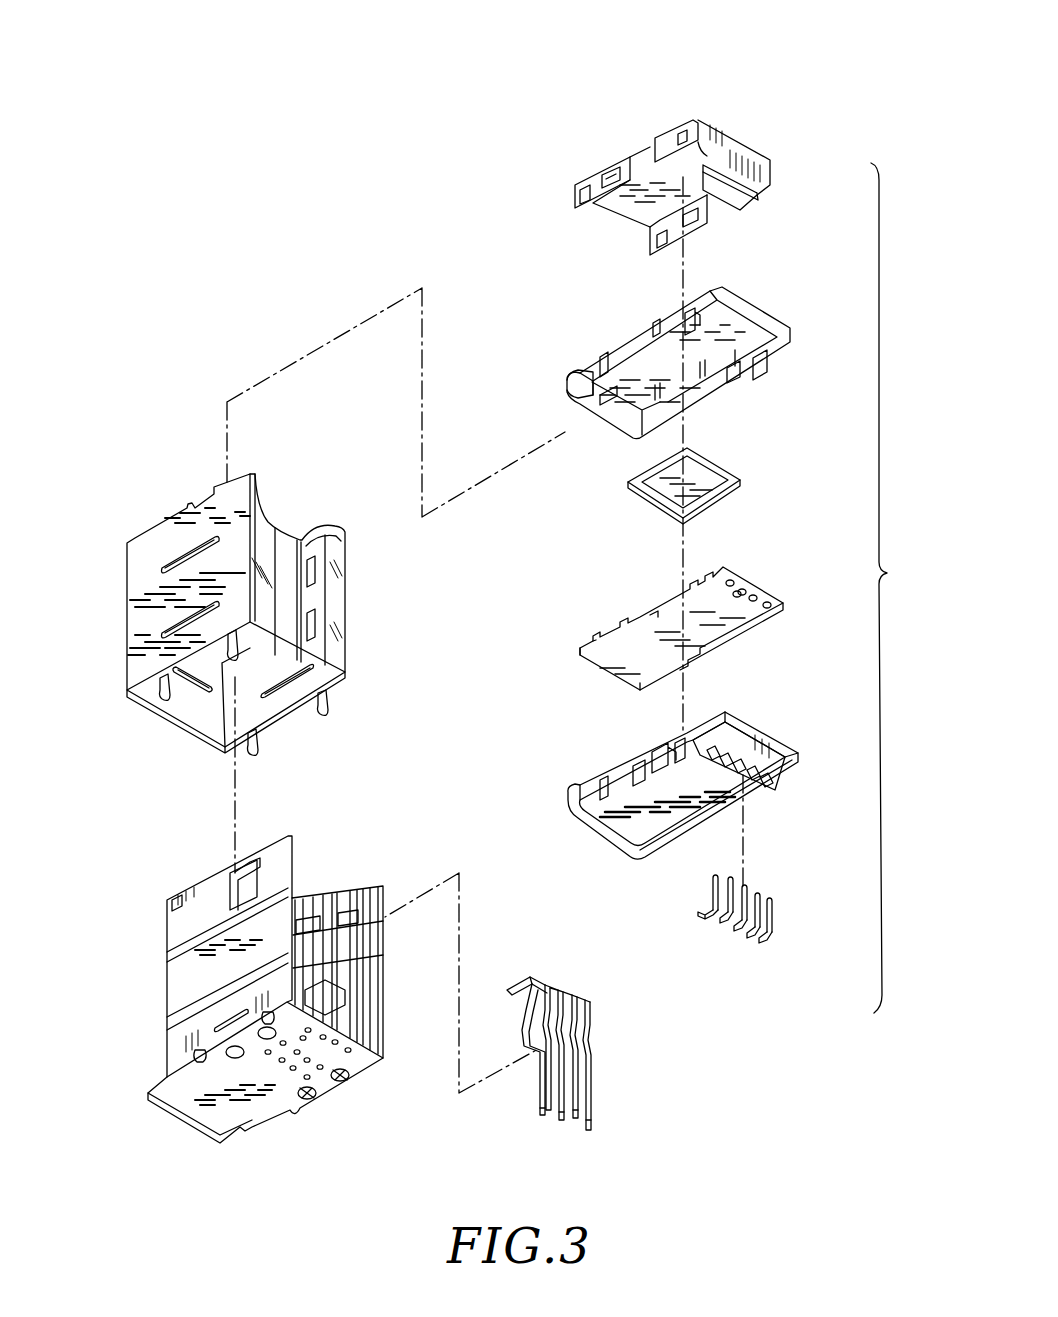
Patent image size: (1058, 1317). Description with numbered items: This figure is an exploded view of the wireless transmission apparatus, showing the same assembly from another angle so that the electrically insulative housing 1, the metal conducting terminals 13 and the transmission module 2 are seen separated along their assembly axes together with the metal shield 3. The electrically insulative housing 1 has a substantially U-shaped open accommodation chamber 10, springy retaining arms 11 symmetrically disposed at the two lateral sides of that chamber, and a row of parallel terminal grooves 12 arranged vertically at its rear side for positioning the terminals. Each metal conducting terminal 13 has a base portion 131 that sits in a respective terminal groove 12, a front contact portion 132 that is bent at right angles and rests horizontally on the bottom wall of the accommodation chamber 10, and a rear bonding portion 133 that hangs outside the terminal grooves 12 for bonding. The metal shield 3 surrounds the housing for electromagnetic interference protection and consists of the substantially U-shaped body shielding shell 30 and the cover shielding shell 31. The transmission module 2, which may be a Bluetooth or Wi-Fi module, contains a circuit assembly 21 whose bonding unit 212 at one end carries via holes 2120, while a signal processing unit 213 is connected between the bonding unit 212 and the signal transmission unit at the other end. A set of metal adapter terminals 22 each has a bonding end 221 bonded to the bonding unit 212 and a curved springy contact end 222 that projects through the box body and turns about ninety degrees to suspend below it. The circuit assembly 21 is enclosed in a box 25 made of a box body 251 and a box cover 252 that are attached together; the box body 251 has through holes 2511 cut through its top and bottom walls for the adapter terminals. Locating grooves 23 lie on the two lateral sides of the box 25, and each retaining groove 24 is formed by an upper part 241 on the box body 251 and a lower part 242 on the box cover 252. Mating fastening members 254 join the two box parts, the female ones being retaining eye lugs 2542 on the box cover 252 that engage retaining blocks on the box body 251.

The electrically insulative housing 1 is at (188, 973).
The accommodation chamber 10 is at (322, 876).
The springy retaining arms 11 is at (233, 870).
The terminal grooves 12 is at (348, 930).
The metal conducting terminals 13 is at (588, 1043).
The base portion 131 is at (588, 1027).
The front contact portion 132 is at (512, 988).
The rear bonding portion 133 is at (589, 1120).
The transmission module 2 is at (889, 588).
The circuit assembly 21 is at (587, 645).
The bonding unit 212 is at (758, 587).
The via holes 2120 is at (768, 612).
The signal processing unit 213 is at (647, 503).
The metal adapter terminals 22 is at (777, 941).
The bonding end 221 is at (768, 912).
The springy contact end 222 is at (758, 940).
The locating grooves 23 is at (573, 380).
The retaining grooves 24 is at (597, 268).
The upper part 241 is at (660, 744).
The lower part 242 is at (668, 325).
The box 25 is at (500, 284).
The box body 251 is at (570, 806).
The through holes 2511 is at (770, 778).
The box cover 252 is at (567, 378).
The mating fastening members 254 is at (795, 240).
The retaining eye lugs 2542 is at (690, 318).
The metal shield 3 is at (580, 73).
The body shielding shell 30 is at (262, 488).
The cover shielding shell 31 is at (618, 157).